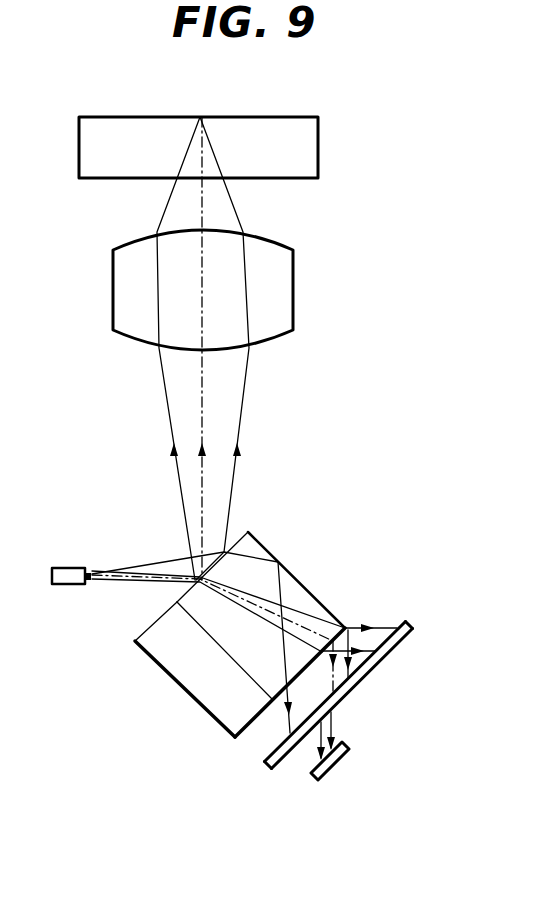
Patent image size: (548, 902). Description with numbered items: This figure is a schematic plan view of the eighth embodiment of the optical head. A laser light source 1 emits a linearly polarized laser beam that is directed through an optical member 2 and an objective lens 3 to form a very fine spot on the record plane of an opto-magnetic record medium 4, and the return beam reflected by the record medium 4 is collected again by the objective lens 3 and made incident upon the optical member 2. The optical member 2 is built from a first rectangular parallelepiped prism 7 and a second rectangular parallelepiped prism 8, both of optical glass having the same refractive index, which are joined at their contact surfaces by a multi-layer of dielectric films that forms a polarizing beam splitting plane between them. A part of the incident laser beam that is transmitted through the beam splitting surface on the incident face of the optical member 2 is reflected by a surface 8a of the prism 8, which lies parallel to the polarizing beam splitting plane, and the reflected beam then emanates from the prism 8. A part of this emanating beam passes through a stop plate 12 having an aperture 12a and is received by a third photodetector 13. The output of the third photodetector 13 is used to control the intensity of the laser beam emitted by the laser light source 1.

The laser light source 1 is at (64, 566).
The optical member 2 is at (256, 611).
The objective lens 3 is at (293, 287).
The opto-magnetic record medium 4 is at (318, 150).
The first rectangular parallelepiped prism 7 is at (197, 683).
The second rectangular parallelepiped prism 8 is at (277, 611).
The surface of the prism 8a is at (263, 542).
The stop plate 12 is at (366, 695).
The aperture 12a is at (330, 716).
The third photodetector 13 is at (335, 767).